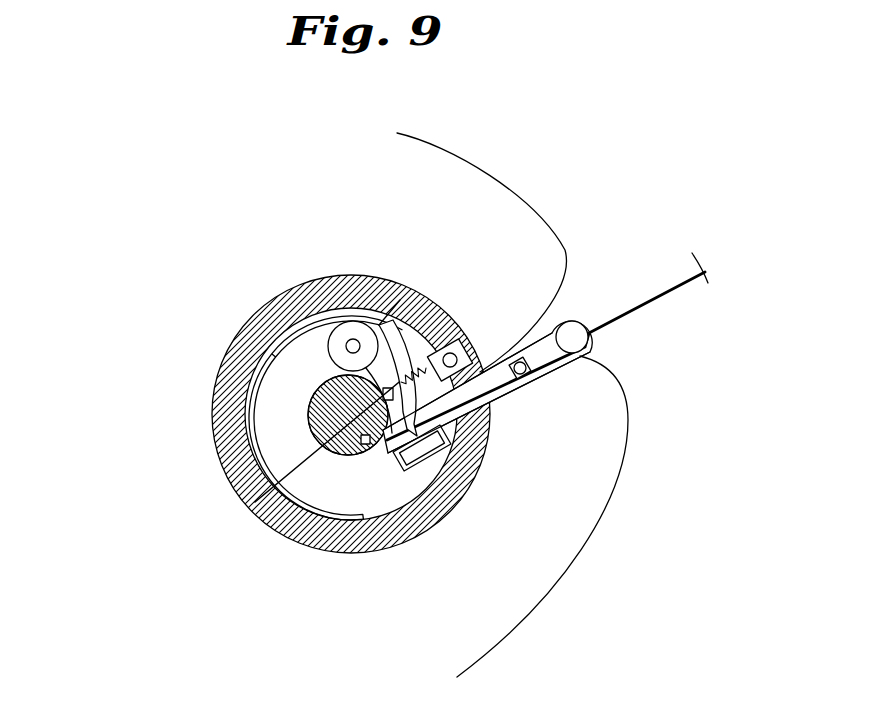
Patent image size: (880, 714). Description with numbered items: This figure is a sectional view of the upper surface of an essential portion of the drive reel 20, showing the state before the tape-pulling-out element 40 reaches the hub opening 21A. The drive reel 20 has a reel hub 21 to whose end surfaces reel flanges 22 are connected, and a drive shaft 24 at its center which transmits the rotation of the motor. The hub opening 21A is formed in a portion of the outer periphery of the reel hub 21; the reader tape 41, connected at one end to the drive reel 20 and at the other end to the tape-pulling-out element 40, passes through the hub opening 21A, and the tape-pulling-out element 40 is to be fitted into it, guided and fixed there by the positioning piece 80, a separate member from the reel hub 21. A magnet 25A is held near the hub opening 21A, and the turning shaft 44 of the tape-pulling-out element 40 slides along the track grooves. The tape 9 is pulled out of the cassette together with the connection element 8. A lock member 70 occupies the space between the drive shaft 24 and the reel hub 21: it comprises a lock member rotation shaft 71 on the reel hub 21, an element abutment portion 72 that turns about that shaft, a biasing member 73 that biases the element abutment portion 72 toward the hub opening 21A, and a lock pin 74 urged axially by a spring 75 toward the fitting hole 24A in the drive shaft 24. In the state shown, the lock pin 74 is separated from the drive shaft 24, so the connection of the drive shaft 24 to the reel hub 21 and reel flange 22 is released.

The connection element 8 is at (576, 341).
The tape 9 is at (690, 268).
The drive reel 20 is at (188, 475).
The reel hub 21 is at (280, 303).
The hub opening 21A is at (452, 448).
The reel flange 22 is at (617, 443).
The drive shaft 24 is at (330, 413).
The fitting hole 24A is at (366, 443).
The magnet 25A is at (432, 486).
The tape-pulling-out element 40 is at (584, 316).
The reader tape 41 is at (447, 420).
The turning shaft 44 is at (525, 372).
The lock member 70 is at (412, 322).
The lock member rotation shaft 71 is at (374, 312).
The element abutment portion 72 is at (393, 463).
The biasing member 73 is at (354, 344).
The lock pin 74 is at (262, 490).
The spring 75 is at (445, 333).
The positioning piece 80 is at (445, 392).